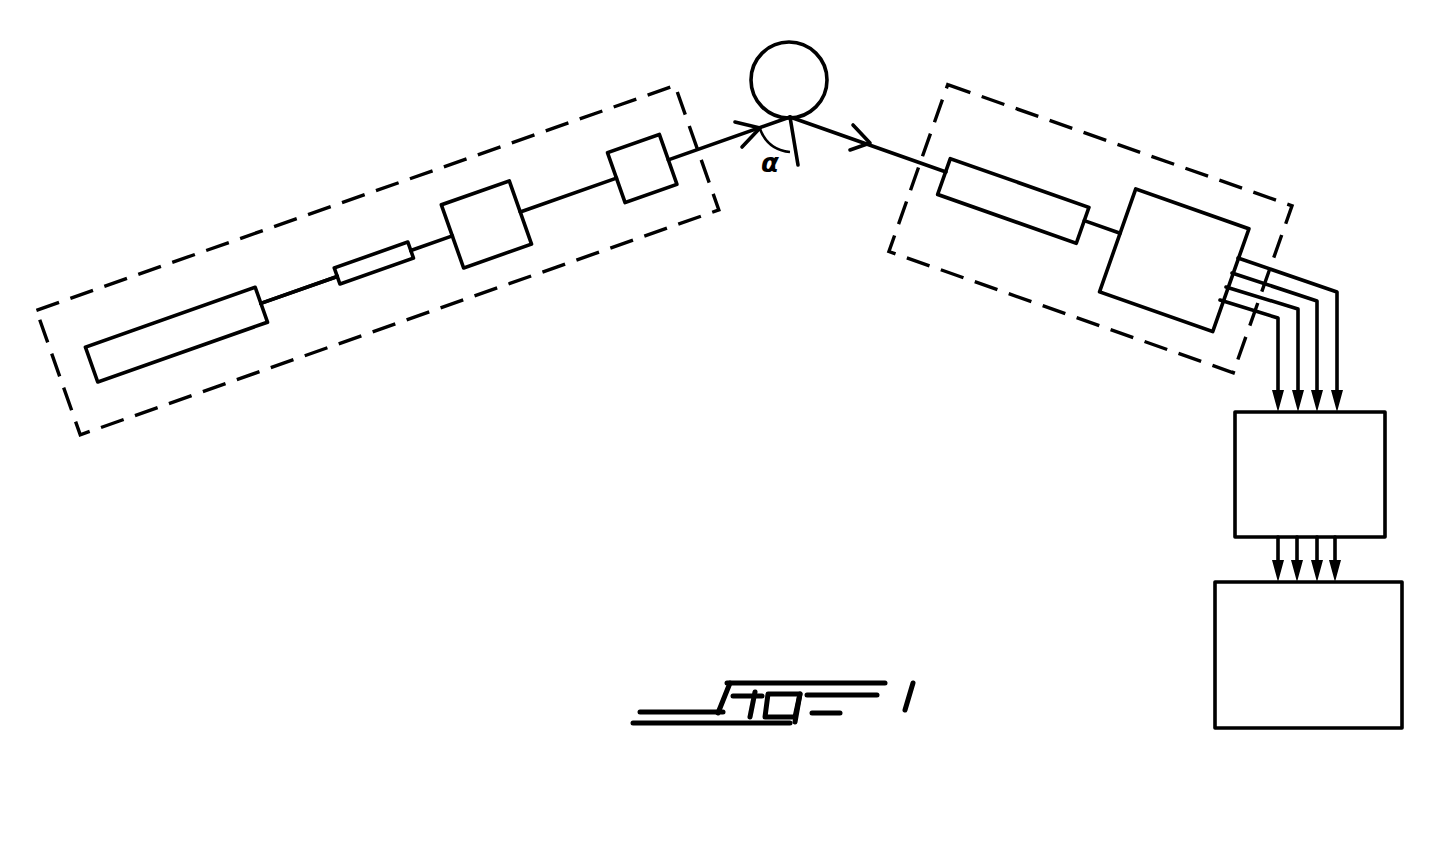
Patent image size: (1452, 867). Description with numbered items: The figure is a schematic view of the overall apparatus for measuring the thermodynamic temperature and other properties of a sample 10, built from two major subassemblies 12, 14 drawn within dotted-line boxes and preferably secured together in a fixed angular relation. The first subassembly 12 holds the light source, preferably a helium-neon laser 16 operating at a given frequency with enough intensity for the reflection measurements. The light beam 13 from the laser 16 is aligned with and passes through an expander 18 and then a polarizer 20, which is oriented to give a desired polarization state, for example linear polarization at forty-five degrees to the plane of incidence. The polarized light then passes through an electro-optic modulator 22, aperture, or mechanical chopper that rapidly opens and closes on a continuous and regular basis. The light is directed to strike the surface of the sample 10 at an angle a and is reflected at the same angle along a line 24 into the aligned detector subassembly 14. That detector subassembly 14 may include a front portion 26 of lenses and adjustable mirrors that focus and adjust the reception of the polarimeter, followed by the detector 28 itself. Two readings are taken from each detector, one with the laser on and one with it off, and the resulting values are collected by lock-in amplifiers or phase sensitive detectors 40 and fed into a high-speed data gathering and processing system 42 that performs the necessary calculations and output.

The sample 10 is at (807, 52).
The subassembly 12 is at (630, 247).
The light beam 13 is at (300, 293).
The detector subassembly 14 is at (1160, 157).
The laser 16 is at (198, 348).
The expander 18 is at (397, 268).
The polarizer 20 is at (515, 252).
The electro-optic modulator 22 is at (670, 187).
The line 24 is at (835, 136).
The front portion 26 is at (1013, 222).
The detector 28 is at (1150, 273).
The lock-in amplifiers 40 is at (1284, 491).
The data gathering and processing system 42 is at (1320, 674).